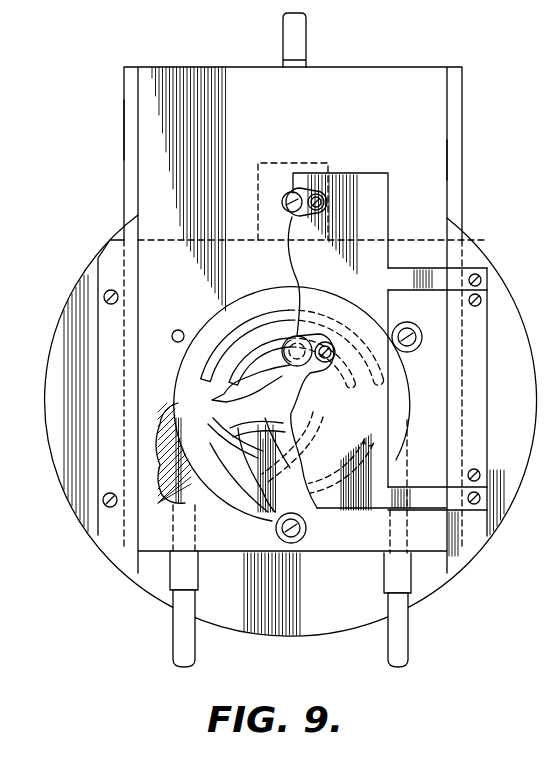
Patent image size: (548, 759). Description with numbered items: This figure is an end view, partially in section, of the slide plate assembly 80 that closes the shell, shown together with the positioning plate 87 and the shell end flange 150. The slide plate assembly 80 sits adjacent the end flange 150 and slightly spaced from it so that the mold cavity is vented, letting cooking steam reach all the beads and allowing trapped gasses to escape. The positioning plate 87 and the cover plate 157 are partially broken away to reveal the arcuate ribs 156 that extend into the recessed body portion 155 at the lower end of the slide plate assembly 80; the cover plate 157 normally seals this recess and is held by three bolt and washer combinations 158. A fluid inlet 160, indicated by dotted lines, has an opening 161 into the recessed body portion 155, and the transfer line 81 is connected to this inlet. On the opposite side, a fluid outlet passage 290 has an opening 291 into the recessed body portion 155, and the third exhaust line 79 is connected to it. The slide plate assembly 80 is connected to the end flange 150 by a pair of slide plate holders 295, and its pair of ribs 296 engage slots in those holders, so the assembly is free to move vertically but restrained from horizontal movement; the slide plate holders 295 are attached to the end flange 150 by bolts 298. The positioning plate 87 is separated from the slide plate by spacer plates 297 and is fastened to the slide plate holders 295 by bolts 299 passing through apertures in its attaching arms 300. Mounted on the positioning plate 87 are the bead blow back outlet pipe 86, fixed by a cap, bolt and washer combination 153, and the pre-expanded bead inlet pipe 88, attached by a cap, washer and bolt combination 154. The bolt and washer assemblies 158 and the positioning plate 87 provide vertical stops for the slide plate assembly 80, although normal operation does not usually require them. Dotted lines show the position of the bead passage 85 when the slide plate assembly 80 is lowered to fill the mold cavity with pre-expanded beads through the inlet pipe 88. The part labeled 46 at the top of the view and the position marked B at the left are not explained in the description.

The shaft 46 is at (306, 31).
The third exhaust line 79 is at (174, 642).
The slide plate assembly 80 is at (463, 104).
The transfer line 81 is at (389, 648).
The bead passage 85 is at (284, 201).
The bead blow back outlet pipe 86 is at (306, 181).
The positioning plate 87 is at (377, 173).
The pre-expanded bead inlet pipe 88 is at (312, 303).
The end flange 150 is at (90, 265).
The cap, bolt and washer combination 153 is at (312, 211).
The cap, washer and bolt combination 154 is at (326, 369).
The recessed body portion 155 is at (270, 303).
The arcuate ribs 156 is at (214, 400).
The cover plate 157 is at (252, 495).
The bolt and washer combinations 158 is at (414, 323).
The fluid inlet 160 is at (400, 470).
The opening 161 is at (389, 528).
The fluid outlet passage 290 is at (182, 482).
The opening 291 is at (195, 443).
The slide plate holders 295 is at (110, 313).
The ribs 296 is at (124, 128).
The spacer plates 297 is at (488, 274).
The bolts 298 is at (118, 294).
The bolts 299 is at (455, 160).
The attaching arms 300 is at (418, 278).
The view direction B is at (9, 499).